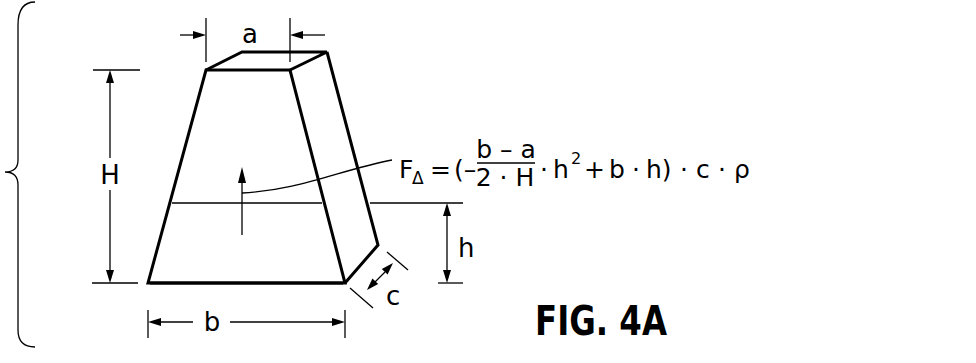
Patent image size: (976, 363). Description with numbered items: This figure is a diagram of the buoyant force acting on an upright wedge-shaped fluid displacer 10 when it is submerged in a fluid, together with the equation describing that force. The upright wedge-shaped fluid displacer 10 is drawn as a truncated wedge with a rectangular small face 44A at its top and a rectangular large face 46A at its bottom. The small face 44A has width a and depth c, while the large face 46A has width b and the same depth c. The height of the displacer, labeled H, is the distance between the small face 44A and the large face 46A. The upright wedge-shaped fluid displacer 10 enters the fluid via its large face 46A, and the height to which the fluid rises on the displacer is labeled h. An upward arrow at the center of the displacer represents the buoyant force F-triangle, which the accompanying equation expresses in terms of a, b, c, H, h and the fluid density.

The upright wedge-shaped fluid displacer 10 is at (335, 88).
The small face 44A is at (308, 57).
The large face 46A is at (185, 284).